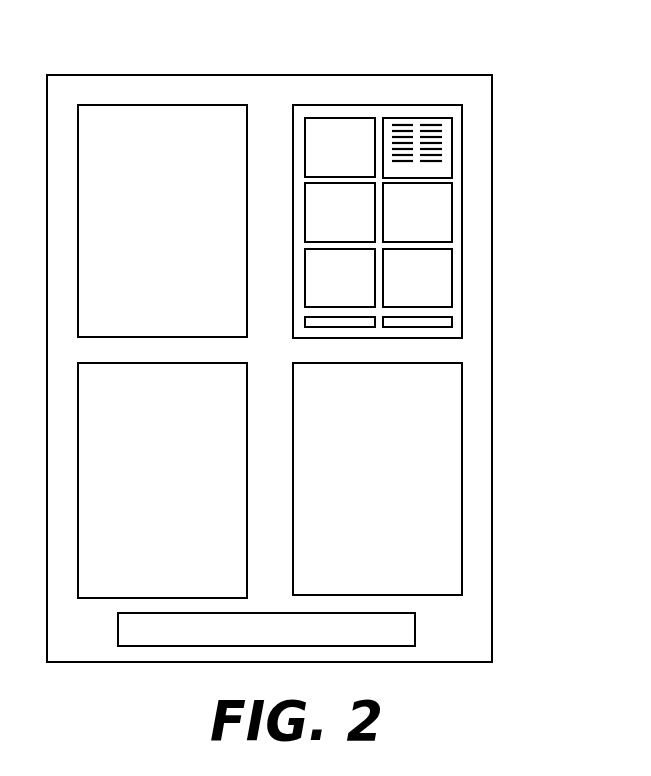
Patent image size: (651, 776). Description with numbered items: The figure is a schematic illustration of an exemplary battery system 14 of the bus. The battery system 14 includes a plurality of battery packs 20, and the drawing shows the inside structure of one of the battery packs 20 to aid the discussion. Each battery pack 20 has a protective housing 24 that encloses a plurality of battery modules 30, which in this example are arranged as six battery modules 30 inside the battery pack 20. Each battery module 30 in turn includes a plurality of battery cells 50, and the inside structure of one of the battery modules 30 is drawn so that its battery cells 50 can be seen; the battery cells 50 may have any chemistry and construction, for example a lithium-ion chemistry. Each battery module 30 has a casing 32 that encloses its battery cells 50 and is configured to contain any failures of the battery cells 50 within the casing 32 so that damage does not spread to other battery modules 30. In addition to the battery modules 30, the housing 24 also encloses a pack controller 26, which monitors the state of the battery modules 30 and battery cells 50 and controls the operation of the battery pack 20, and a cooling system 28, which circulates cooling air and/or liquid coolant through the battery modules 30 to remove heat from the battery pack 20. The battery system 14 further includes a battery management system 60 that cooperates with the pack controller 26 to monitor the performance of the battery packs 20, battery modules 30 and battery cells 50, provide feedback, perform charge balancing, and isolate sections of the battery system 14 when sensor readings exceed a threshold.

The battery system 14 is at (544, 104).
The battery pack 20 is at (148, 228).
The protective housing 24 is at (463, 232).
The pack controller 26 is at (452, 325).
The cooling system 28 is at (362, 327).
The battery module 30 is at (350, 160).
The casing 32 is at (347, 118).
The battery cell 50 is at (432, 125).
The battery management system 60 is at (415, 627).